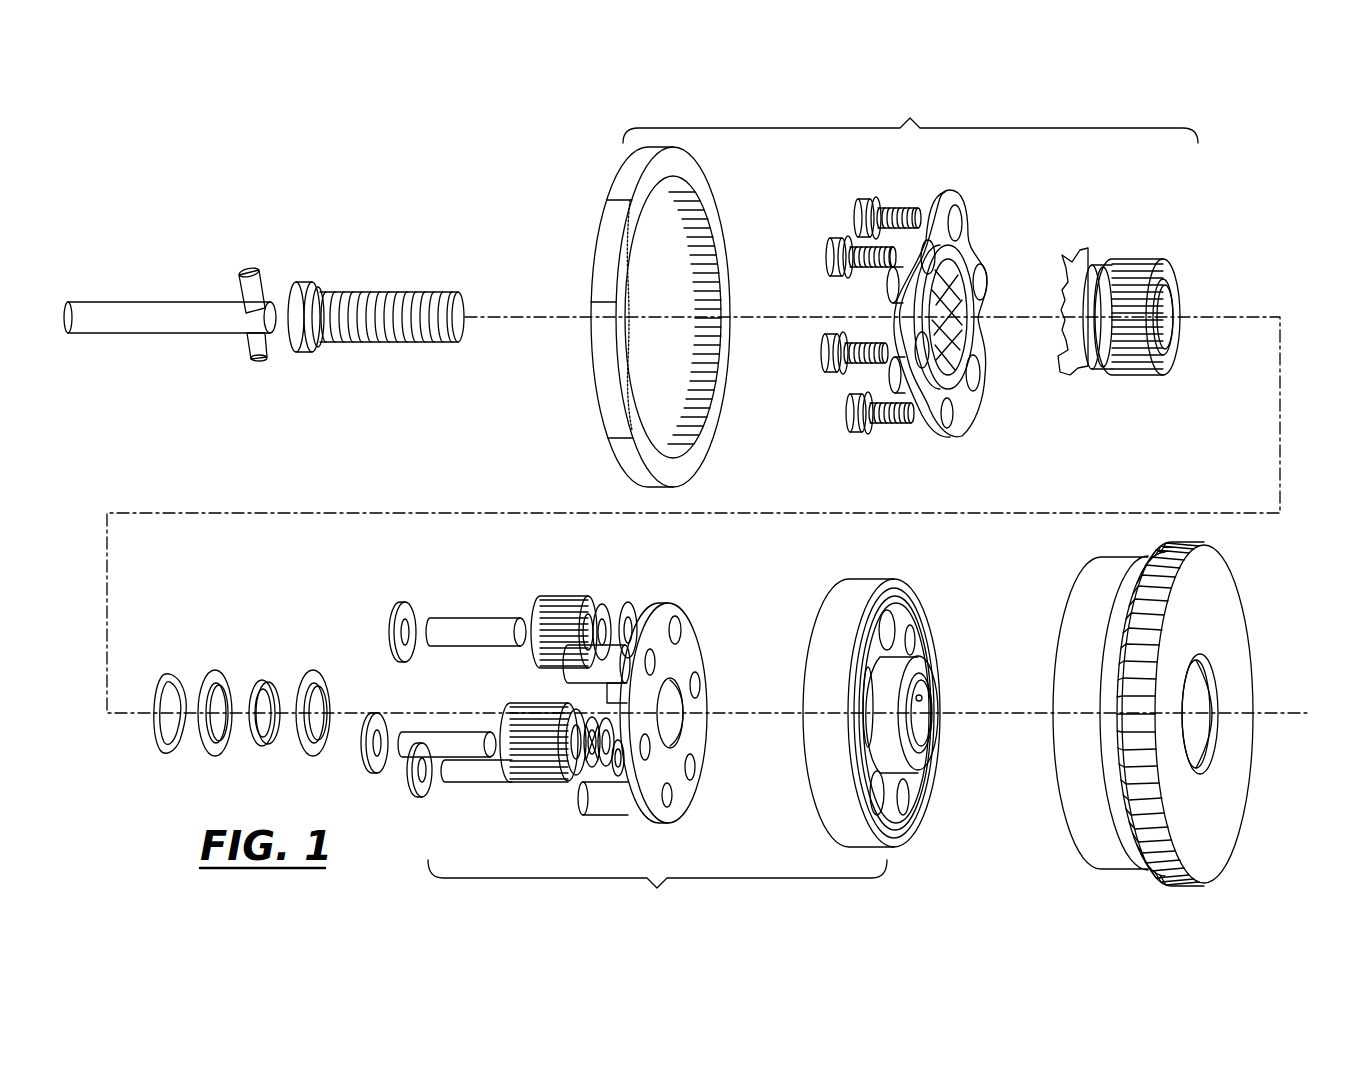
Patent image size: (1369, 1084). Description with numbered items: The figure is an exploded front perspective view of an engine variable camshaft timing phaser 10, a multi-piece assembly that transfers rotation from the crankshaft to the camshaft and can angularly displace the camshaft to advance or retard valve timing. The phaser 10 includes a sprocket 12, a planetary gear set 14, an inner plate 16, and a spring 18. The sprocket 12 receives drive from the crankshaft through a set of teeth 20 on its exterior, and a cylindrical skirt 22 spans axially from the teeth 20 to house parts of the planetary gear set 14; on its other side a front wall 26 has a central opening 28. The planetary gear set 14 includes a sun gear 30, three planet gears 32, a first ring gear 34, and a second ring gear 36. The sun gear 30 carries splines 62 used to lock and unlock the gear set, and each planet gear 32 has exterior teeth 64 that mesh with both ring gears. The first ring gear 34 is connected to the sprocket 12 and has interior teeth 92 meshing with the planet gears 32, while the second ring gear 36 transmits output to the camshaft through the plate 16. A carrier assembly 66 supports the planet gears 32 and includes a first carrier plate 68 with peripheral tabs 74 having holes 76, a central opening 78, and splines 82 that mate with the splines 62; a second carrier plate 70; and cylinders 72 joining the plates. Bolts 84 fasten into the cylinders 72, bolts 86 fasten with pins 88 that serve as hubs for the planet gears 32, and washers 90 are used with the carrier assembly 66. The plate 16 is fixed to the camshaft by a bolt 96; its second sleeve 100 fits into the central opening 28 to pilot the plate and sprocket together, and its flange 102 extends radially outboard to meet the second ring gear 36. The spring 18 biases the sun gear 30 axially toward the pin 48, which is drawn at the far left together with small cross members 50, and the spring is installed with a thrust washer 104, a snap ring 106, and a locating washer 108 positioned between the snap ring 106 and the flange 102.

The phaser 10 is at (1283, 216).
The sprocket 12 is at (1182, 727).
The planetary gear set 14 is at (813, 504).
The inner plate 16 is at (906, 615).
The spring 18 is at (163, 672).
The set of teeth 20 is at (1185, 886).
The skirt 22 is at (1103, 845).
The front wall 26 is at (1217, 845).
The central opening 28 is at (1207, 738).
The sun gear 30 is at (1119, 320).
The planet gears 32 is at (561, 693).
The first ring gear 34 is at (677, 317).
The second ring gear 36 is at (902, 691).
The pin 48 is at (203, 302).
The pin 50 is at (253, 279).
The set of teeth 62 is at (1069, 263).
The set of teeth 64 is at (584, 595).
The carrier assembly 66 is at (880, 372).
The first carrier plate 68 is at (953, 200).
The second carrier plate 70 is at (705, 633).
The cylinders 72 is at (618, 650).
The tabs 74 is at (955, 420).
The holes 76 is at (975, 292).
The central opening 78 is at (960, 345).
The set of teeth 82 is at (960, 320).
The bolts 84 is at (867, 274).
The bolts 86 is at (862, 208).
The pins 88 is at (466, 640).
The washers 90 is at (404, 603).
The set of teeth 92 is at (690, 382).
The bolt 96 is at (373, 293).
The second sleeve 100 is at (908, 655).
The flange 102 is at (892, 607).
The thrust washer 104 is at (212, 670).
The snap ring 106 is at (263, 680).
The locating washer 108 is at (316, 670).